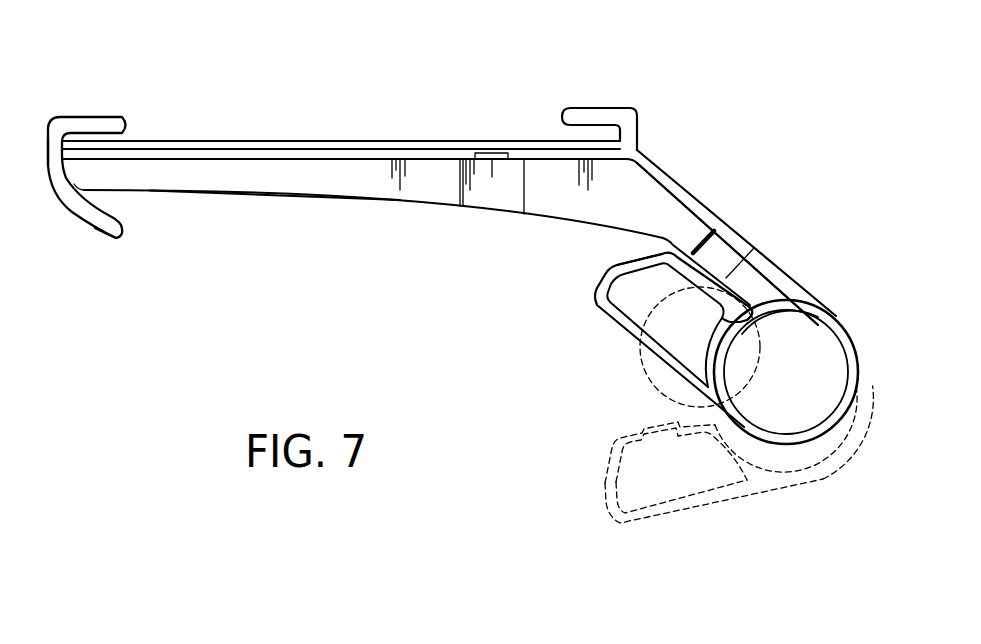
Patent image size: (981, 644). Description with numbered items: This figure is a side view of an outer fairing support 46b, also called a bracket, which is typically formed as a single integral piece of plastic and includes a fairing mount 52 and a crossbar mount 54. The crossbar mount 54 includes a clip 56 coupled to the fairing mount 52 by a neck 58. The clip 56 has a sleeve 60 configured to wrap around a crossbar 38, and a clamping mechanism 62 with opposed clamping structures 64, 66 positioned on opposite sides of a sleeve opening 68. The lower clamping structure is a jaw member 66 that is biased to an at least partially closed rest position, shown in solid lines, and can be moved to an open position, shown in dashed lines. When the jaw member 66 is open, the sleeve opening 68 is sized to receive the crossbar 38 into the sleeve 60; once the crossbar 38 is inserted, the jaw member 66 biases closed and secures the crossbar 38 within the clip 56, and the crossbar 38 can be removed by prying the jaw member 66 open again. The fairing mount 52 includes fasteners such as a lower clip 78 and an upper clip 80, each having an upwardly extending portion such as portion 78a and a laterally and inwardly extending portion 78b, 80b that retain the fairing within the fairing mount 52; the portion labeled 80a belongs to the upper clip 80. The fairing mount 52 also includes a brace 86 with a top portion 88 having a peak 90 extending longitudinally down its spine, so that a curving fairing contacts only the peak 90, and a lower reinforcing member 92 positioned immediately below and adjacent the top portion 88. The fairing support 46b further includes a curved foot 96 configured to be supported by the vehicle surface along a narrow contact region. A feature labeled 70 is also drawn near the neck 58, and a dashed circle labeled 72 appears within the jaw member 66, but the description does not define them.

The fairing support 46b is at (770, 90).
The lower clip 78 is at (104, 101).
The upwardly extending portion 78a is at (46, 128).
The laterally and inwardly extending portion 78b is at (93, 113).
The foot 96 is at (87, 230).
The top portion 88 is at (220, 153).
The peak 90 is at (317, 140).
The lower reinforcing member 92 is at (353, 185).
The brace 86 is at (186, 192).
The fairing mount 52 is at (273, 193).
The upper clip 80 is at (603, 98).
The hook leg 80a is at (641, 138).
The laterally and inwardly extending portion 80b is at (592, 108).
The crossbar mount 54 is at (706, 201).
The hinge 70 is at (714, 240).
The neck 58 is at (754, 245).
The jaw member 66 is at (593, 298).
The clamping mechanism 62 is at (625, 242).
The opening 72 is at (681, 277).
The clamping structure 64 is at (751, 306).
The clip 56 is at (765, 440).
The sleeve opening 68 is at (754, 320).
The sleeve 60 is at (862, 372).
The crossbar 38 is at (638, 357).